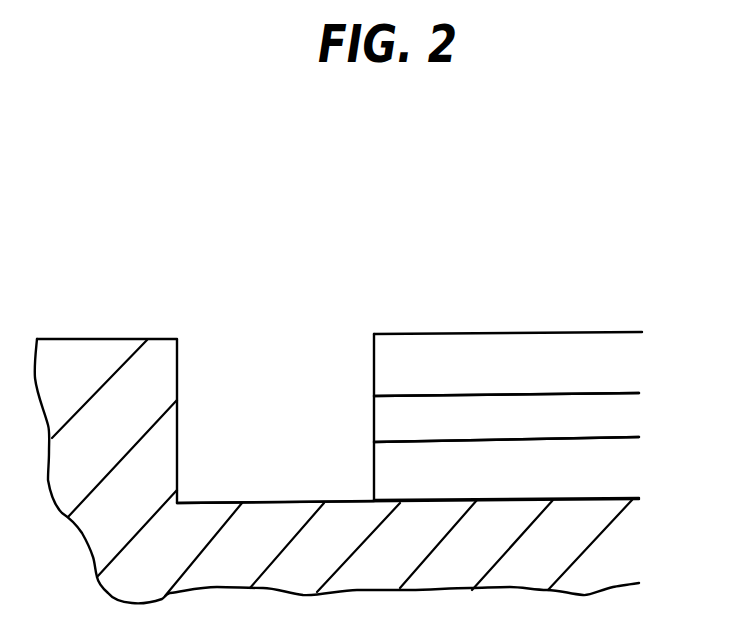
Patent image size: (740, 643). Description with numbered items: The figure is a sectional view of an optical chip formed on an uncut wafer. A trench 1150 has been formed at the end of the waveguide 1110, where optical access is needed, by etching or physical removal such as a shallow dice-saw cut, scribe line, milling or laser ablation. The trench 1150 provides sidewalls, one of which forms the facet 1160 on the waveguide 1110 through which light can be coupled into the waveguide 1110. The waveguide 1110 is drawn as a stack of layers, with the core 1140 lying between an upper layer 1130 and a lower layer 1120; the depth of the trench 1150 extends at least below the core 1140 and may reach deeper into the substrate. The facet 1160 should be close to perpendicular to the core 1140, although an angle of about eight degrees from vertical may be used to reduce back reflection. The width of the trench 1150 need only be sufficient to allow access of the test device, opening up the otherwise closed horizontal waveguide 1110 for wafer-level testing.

The waveguide 1110 is at (581, 321).
The bottom layer 1120 is at (536, 468).
The top layer 1130 is at (536, 364).
The core 1140 is at (536, 417).
The trench 1150 is at (293, 488).
The facet 1160 is at (374, 370).